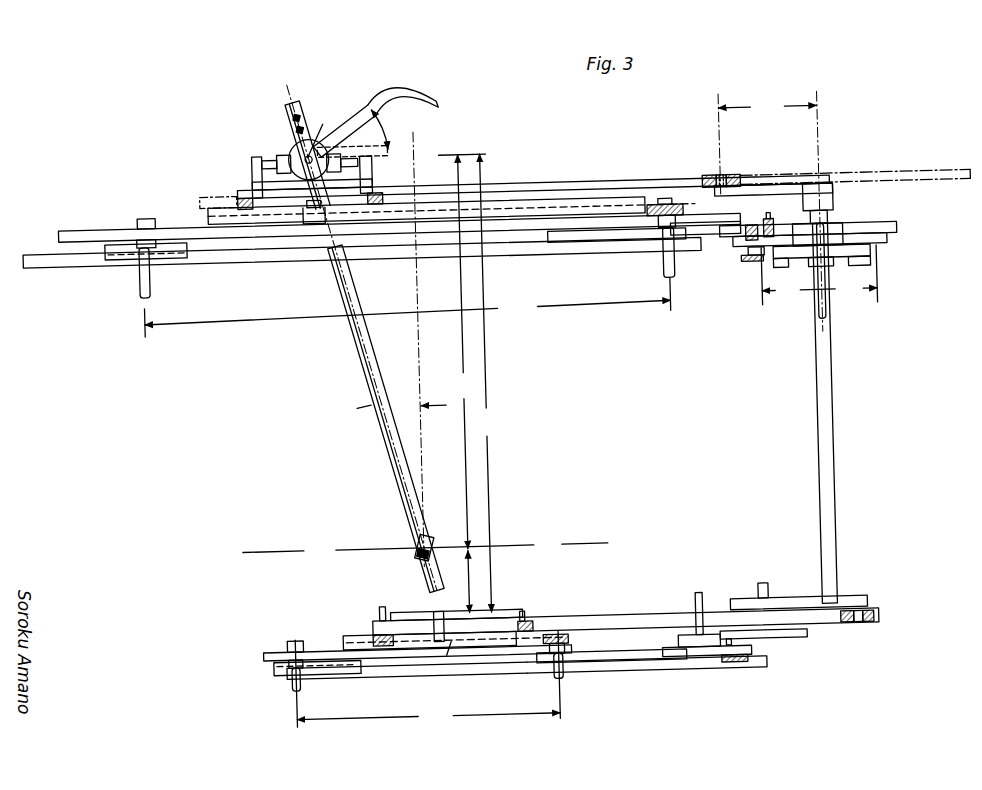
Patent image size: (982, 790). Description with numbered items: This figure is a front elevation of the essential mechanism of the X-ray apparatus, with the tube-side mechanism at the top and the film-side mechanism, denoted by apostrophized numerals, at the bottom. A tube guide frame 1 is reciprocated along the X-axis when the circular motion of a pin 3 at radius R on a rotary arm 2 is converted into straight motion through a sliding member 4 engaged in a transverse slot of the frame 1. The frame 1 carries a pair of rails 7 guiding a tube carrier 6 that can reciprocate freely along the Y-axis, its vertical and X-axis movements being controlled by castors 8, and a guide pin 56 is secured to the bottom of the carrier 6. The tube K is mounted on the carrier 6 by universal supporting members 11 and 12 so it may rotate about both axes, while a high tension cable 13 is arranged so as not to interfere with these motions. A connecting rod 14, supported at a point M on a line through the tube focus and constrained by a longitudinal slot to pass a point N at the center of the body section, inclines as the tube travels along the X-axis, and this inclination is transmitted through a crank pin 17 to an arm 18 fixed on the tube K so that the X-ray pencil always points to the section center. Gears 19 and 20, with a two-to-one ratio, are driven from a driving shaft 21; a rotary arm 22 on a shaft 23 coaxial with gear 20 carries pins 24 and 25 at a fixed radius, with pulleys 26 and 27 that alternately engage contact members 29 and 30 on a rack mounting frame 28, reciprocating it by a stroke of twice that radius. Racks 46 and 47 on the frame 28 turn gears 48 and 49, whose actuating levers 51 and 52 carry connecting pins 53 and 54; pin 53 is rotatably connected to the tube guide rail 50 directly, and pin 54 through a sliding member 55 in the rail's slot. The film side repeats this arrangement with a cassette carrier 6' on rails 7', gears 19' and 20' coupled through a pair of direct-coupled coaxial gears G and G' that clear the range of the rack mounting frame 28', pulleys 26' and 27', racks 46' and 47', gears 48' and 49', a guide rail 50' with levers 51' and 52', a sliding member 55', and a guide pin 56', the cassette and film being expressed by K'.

The tube guide frame 1 is at (571, 184).
The rotary arm 2 is at (766, 197).
The pin 3 is at (722, 196).
The sliding member 4 is at (722, 185).
The tube carrier 6 is at (306, 213).
The rails 7 is at (299, 185).
The castors 8 is at (259, 170).
The universal supporting member 11 is at (294, 143).
The universal supporting member 12 is at (270, 159).
The high tension cable 13 is at (913, 226).
The connecting rod 14 is at (352, 368).
The crank pin 17 is at (297, 92).
The arm 18 is at (299, 119).
The gear 19 is at (842, 279).
The gear 20 is at (832, 289).
The driving shaft 21 is at (835, 371).
The rotary arm 22 is at (850, 247).
The shaft 23 is at (821, 313).
The pin 24 is at (879, 266).
The pin 25 is at (761, 275).
The pulley 26 is at (834, 239).
The pulley 27 is at (738, 267).
The rack mounting frame 28 is at (512, 262).
The contact members 29 is at (757, 239).
The contact members 30 is at (778, 229).
The rack 46 is at (617, 256).
The rack 47 is at (173, 274).
The gear 48 is at (706, 260).
The gear 49 is at (168, 266).
The tube guide rail 50 is at (451, 184).
The actuating lever 51 is at (652, 248).
The actuating lever 52 is at (398, 207).
The connecting pin 53 is at (669, 209).
The connecting pin 54 is at (152, 210).
The sliding member 55 is at (310, 246).
The guide pin 56 is at (300, 225).
The tube K is at (287, 147).
The point M is at (320, 128).
The point N is at (423, 543).
The cassette carrier 6' is at (625, 603).
The rails 7' is at (455, 617).
The gear 19' is at (872, 590).
The gear 20' is at (684, 616).
The pulley 26' is at (708, 669).
The pulley 27' is at (754, 655).
The rack mounting frame 28' is at (648, 689).
The rack 46' is at (642, 671).
The rack 47' is at (407, 677).
The gear 48' is at (559, 672).
The gear 49' is at (301, 681).
The guide rail 50' is at (436, 623).
The actuating lever 51' is at (577, 655).
The actuating lever 52' is at (395, 663).
The sliding member 55' is at (474, 672).
The guide pin 56' is at (399, 605).
The cassette and film K' is at (451, 615).
The gear G is at (777, 648).
The gear G' is at (798, 585).